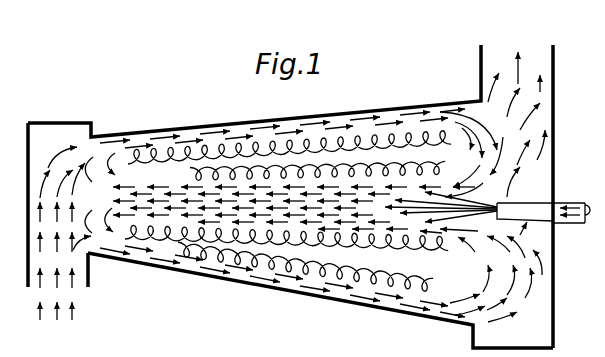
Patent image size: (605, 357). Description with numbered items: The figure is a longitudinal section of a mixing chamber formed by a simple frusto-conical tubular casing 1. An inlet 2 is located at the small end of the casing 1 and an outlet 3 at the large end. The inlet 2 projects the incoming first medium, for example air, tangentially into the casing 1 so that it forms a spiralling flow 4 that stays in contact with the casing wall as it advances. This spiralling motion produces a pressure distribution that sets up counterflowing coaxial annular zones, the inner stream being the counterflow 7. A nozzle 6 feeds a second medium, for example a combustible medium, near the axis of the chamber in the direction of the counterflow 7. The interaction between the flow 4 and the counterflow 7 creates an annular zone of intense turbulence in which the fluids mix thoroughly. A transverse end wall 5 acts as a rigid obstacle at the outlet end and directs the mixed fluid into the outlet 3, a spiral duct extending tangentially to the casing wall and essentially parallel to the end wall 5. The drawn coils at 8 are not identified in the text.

The tubular casing 1 is at (263, 285).
The inlet 2 is at (79, 288).
The outlet 3 is at (547, 88).
The flow 4 is at (38, 280).
The end wall 5 is at (553, 291).
The nozzle 6 is at (522, 203).
The counterflow 7 is at (335, 213).
The heating coil 8 is at (288, 211).